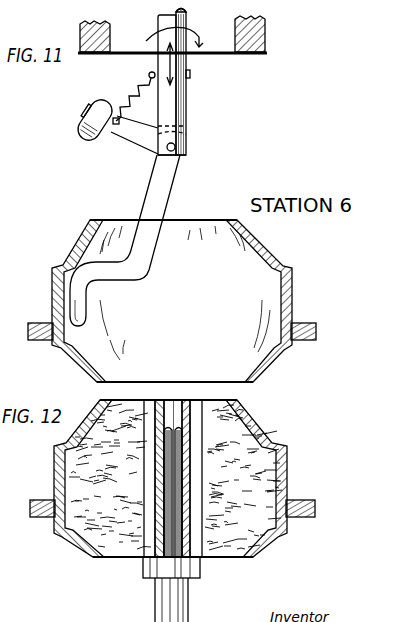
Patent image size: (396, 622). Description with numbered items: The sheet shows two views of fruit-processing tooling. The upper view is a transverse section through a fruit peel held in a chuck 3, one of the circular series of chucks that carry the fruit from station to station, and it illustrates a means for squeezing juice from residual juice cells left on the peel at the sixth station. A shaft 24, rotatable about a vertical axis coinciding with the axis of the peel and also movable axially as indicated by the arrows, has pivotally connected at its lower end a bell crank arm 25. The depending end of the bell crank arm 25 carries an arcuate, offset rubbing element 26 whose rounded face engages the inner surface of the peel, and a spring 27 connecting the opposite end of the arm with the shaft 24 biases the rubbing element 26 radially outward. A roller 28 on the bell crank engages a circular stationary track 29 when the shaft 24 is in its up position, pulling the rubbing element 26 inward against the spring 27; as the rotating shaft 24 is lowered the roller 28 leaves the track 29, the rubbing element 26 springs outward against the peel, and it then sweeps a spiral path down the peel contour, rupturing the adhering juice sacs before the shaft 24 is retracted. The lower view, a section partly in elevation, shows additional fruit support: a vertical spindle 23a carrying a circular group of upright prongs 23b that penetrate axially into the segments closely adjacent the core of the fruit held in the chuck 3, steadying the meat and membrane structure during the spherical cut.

In FIG. 11, the chuck 3 is at (302, 280).
In FIG. 12, the chuck 3 is at (47, 474).
In FIG. 11, the shaft 24 is at (187, 103).
In FIG. 11, the bell crank arm 25 is at (165, 198).
In FIG. 11, the rubbing element 26 is at (84, 312).
In FIG. 11, the spring 27 is at (139, 85).
In FIG. 11, the roller 28 is at (88, 138).
In FIG. 11, the circular stationary track 29 is at (250, 56).
In FIG. 12, the vertical spindle 23a is at (189, 600).
In FIG. 12, the upright prong 23b is at (202, 475).